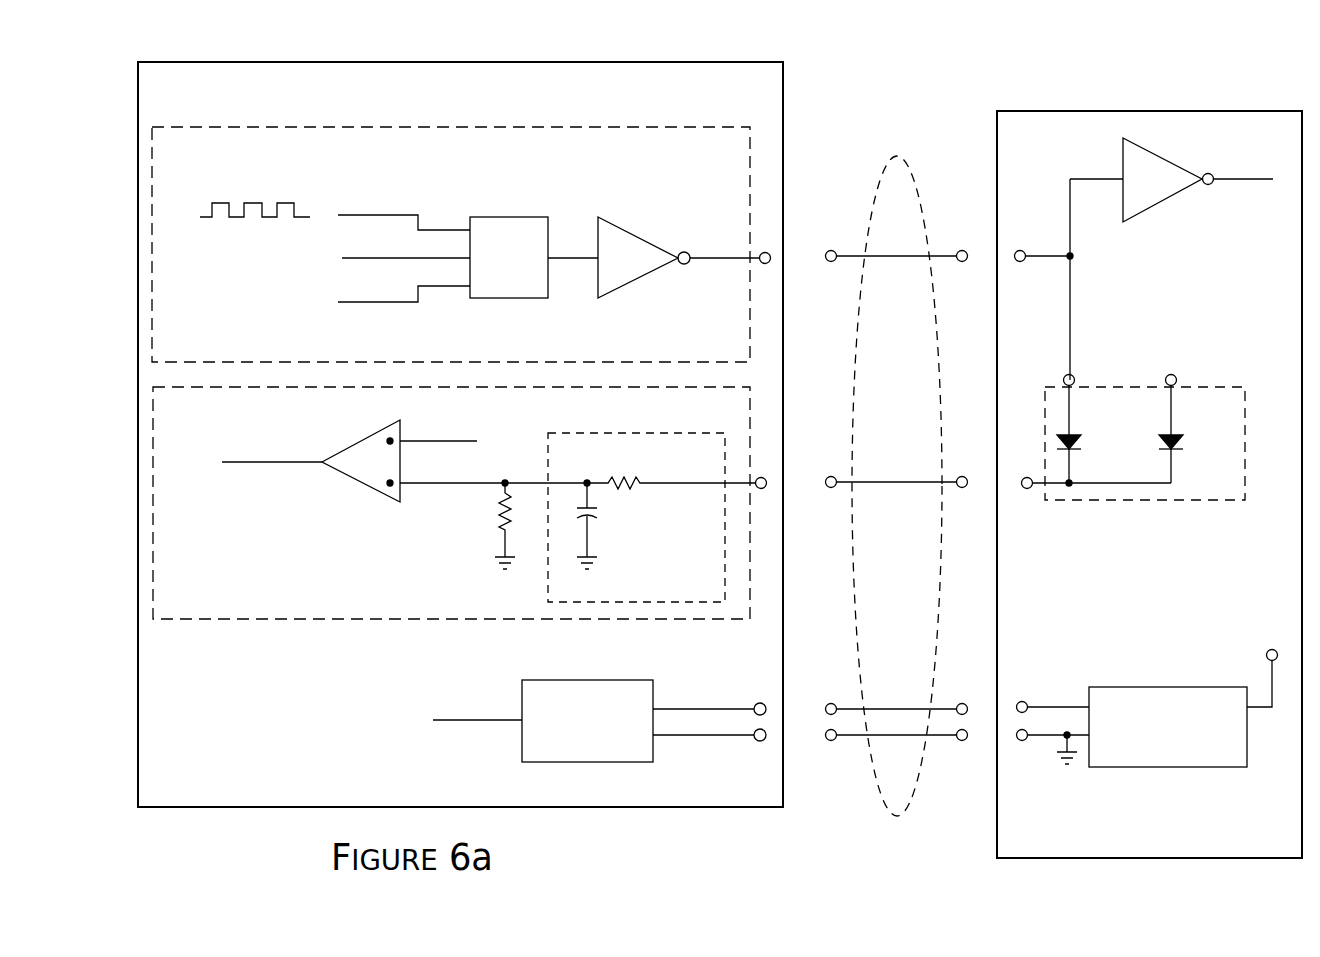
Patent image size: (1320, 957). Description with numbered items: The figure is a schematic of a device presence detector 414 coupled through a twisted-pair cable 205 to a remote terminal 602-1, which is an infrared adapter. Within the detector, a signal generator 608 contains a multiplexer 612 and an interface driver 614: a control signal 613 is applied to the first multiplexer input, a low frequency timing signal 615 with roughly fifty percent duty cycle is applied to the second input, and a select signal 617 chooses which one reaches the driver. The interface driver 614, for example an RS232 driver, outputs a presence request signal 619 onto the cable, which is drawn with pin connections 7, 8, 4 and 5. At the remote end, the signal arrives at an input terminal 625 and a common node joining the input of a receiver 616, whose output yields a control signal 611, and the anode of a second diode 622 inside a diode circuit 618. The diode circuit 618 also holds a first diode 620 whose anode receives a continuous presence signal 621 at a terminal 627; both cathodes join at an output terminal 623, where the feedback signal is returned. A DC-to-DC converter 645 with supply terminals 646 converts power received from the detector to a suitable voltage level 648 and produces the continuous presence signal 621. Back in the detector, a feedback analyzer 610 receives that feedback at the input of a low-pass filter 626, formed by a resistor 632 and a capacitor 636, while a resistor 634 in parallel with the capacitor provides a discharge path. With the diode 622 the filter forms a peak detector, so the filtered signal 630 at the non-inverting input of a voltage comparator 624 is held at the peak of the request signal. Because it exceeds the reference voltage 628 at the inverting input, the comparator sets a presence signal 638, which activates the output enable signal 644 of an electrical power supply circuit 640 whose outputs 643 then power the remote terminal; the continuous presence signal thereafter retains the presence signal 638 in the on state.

The device presence detector 414 is at (305, 62).
The signal generator 608 is at (268, 127).
The timing signal 615 is at (410, 216).
The control signal 613 is at (400, 258).
The select signal 617 is at (390, 302).
The multiplexer 612 is at (540, 217).
The interface driver 614 is at (652, 212).
The presence request signal 619 is at (746, 252).
The feedback analyzer 610 is at (318, 630).
The voltage comparator 624 is at (350, 447).
The presence signal 638 is at (283, 462).
The reference voltage 628 is at (420, 441).
The filtered signal 630 is at (405, 487).
The resistor 634 is at (492, 522).
The low-pass filter 626 is at (612, 433).
The resistor 632 is at (628, 478).
The capacitor 636 is at (600, 514).
The electrical power supply circuit 640 is at (625, 680).
The output enable signal 644 is at (482, 720).
The power terminals 643 is at (760, 702).
The twisted-pair cable 205 is at (882, 160).
The connector pin 7 is at (894, 241).
The connector pin 8 is at (894, 467).
The connector pin 4 is at (893, 695).
The connector pin 5 is at (893, 756).
The remote terminal 602-1 is at (1148, 111).
The input terminal 625 is at (1021, 250).
The receiver 616 is at (1150, 212).
The control signal 611 is at (1268, 178).
The diode circuit 618 is at (1245, 470).
The terminal 627 is at (1096, 362).
The continuous presence signal 621 is at (1176, 380).
The second diode 622 is at (1082, 442).
The first diode 620 is at (1210, 420).
The output terminal 623 is at (1027, 490).
The DC-to-DC converter 645 is at (1200, 687).
The power input terminal 646 is at (1050, 680).
The voltage level 648 is at (1272, 649).